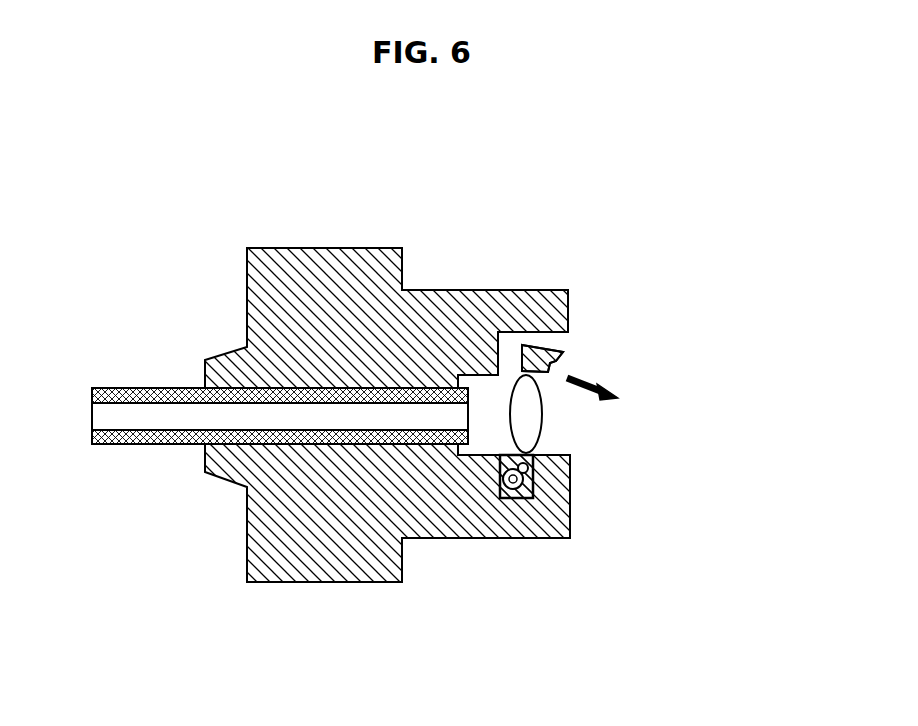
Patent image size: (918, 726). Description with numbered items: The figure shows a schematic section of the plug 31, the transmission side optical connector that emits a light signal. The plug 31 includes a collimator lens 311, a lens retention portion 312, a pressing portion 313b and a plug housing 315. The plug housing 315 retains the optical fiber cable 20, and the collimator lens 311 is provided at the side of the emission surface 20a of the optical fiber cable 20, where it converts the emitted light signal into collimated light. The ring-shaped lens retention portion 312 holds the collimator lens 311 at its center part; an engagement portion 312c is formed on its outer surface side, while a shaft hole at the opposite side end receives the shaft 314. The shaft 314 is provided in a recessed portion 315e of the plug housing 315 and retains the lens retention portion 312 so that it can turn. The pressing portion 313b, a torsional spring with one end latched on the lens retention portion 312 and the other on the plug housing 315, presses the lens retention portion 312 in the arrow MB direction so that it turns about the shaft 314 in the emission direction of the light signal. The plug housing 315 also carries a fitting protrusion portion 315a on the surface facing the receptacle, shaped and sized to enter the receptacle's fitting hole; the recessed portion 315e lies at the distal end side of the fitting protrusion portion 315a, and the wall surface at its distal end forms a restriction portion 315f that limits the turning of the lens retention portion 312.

The plug housing 315 is at (232, 276).
The optical fiber cable 20 is at (157, 387).
The emission surface 20a is at (473, 414).
The recessed portion 315e is at (496, 442).
The lens retention portion 312 is at (576, 347).
The engagement portion 312c is at (565, 356).
The arrow MB direction MB is at (617, 393).
The collimator lens 311 is at (543, 414).
The restriction portion 315f is at (571, 478).
The fitting protrusion portion 315a is at (435, 540).
The shaft 314 is at (520, 540).
The pressing portion 313b is at (553, 540).
The plug 31 is at (320, 712).